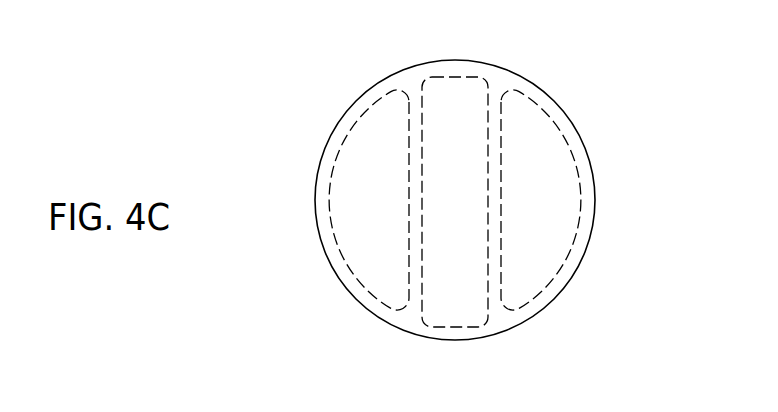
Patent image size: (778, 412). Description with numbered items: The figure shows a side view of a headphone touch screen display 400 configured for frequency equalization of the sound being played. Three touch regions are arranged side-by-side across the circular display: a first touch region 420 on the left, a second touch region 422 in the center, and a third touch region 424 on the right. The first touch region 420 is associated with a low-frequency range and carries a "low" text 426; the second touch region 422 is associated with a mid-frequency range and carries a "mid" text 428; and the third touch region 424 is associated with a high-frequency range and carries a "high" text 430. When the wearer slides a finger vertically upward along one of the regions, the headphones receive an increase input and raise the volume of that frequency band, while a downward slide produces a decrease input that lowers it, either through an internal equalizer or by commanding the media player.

The touch screen display 400 is at (596, 83).
The first touch region 420 is at (362, 288).
The second touch region 422 is at (470, 328).
The third touch region 424 is at (577, 240).
The low text 426 is at (382, 212).
The mid text 428 is at (457, 215).
The high text 430 is at (540, 210).